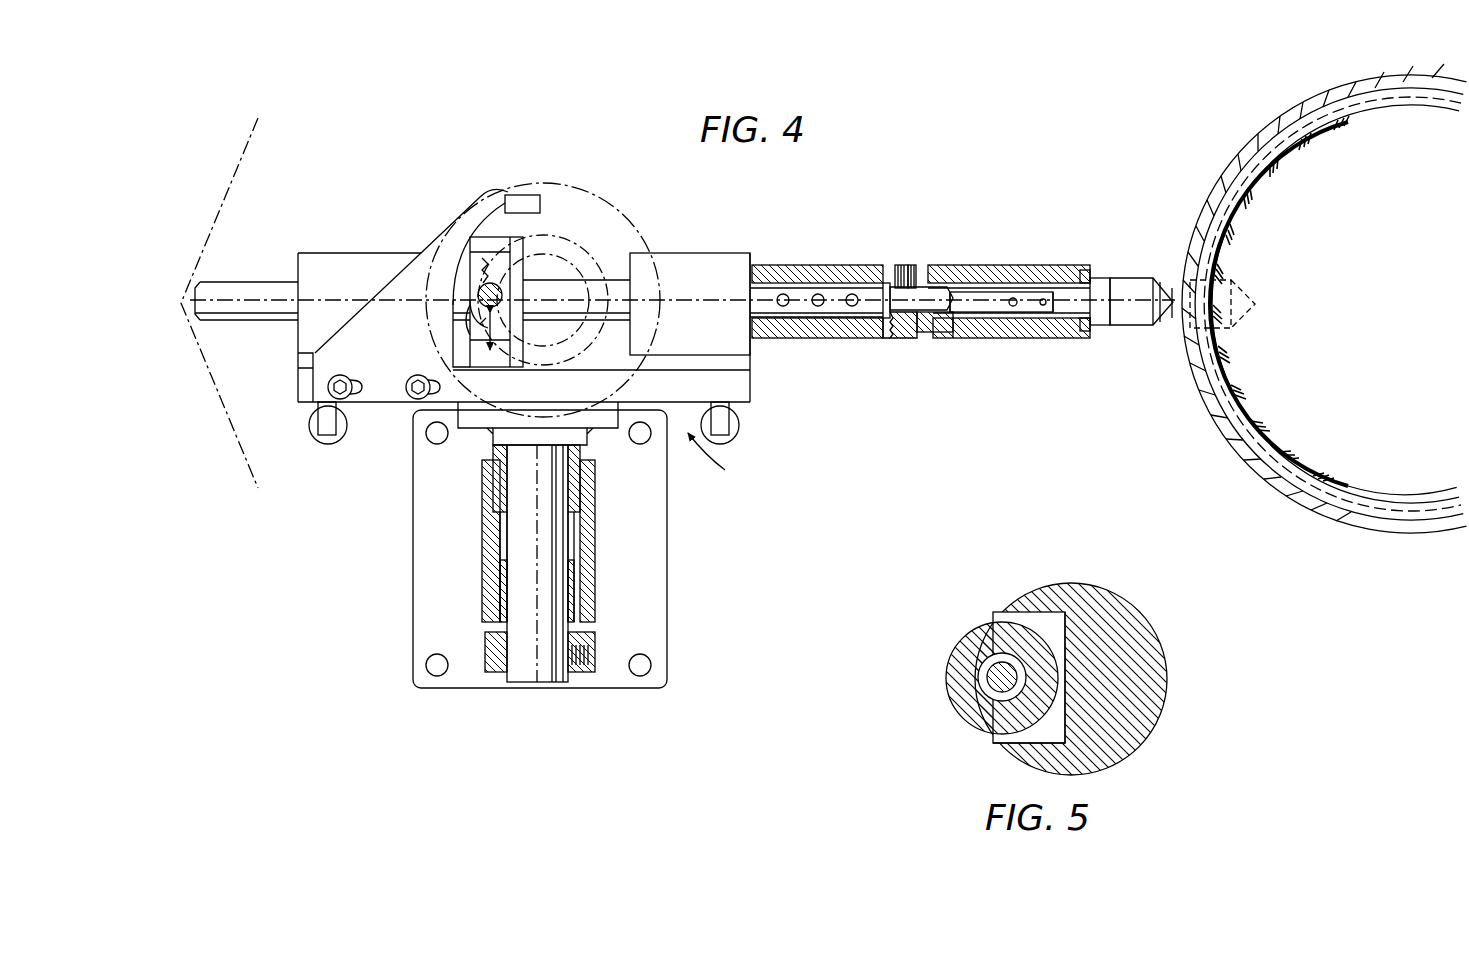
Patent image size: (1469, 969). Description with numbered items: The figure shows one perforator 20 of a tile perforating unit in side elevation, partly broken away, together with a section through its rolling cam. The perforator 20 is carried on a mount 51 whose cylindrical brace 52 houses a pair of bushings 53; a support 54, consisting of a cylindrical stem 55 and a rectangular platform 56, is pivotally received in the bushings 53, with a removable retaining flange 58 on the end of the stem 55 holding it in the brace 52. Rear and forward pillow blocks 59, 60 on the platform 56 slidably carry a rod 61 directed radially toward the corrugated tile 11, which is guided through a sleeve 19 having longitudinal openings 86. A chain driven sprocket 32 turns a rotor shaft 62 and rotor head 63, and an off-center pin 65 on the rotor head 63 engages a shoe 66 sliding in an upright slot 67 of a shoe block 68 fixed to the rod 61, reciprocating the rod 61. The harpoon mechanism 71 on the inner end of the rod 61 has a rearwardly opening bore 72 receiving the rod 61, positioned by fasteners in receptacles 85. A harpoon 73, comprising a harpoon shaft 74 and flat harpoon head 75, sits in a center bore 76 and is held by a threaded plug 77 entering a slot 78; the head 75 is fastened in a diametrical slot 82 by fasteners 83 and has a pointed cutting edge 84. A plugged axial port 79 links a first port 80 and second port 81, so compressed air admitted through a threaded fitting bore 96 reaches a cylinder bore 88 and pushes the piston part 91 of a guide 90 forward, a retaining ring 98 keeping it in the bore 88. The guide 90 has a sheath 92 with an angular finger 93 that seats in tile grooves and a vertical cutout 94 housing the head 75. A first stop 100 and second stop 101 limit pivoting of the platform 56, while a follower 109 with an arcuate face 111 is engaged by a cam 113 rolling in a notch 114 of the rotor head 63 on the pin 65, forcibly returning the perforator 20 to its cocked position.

In FIG. 4, the corrugated tile 11 is at (1310, 462).
In FIG. 4, the sleeve 19 is at (1338, 525).
In FIG. 4, the perforator 20 is at (905, 168).
In FIG. 4, the chain driven sprocket 32 is at (605, 200).
In FIG. 4, the mount 51 is at (680, 565).
In FIG. 4, the cylindrical brace 52 is at (600, 540).
In FIG. 4, the bushings 53 is at (595, 497).
In FIG. 4, the support 54 is at (726, 464).
In FIG. 4, the cylindrical stem 55 is at (552, 577).
In FIG. 4, the rectangular platform 56 is at (752, 392).
In FIG. 4, the retaining flange 58 is at (600, 662).
In FIG. 4, the rear pillow block 59 is at (345, 254).
In FIG. 4, the forward pillow block 60 is at (716, 254).
In FIG. 4, the rod 61 is at (238, 282).
In FIG. 4, the rotor shaft 62 is at (568, 345).
In FIG. 4, the rotor head 63 is at (596, 320).
In FIG. 5, the rotor head 63 is at (1170, 695).
In FIG. 4, the off-center pin 65 is at (478, 295).
In FIG. 5, the off-center pin 65 is at (975, 682).
In FIG. 4, the shoe 66 is at (458, 322).
In FIG. 4, the upright slot 67 is at (456, 352).
In FIG. 4, the shoe block 68 is at (518, 245).
In FIG. 4, the harpoon mechanism 71 is at (1045, 212).
In FIG. 4, the rearwardly opening bore 72 is at (855, 338).
In FIG. 4, the harpoon 73 is at (972, 340).
In FIG. 4, the harpoon shaft 74 is at (930, 332).
In FIG. 4, the harpoon head 75 is at (1135, 278).
In FIG. 4, the center bore 76 is at (888, 290).
In FIG. 4, the threaded plug 77 is at (900, 342).
In FIG. 4, the slot 78 is at (888, 340).
In FIG. 4, the plugged axial port 79 is at (932, 295).
In FIG. 4, the first port 80 is at (905, 264).
In FIG. 4, the second port 81 is at (962, 286).
In FIG. 4, the diametrical slot 82 is at (1062, 310).
In FIG. 4, the fasteners 83 is at (1014, 298).
In FIG. 4, the cutting edge 84 is at (1163, 325).
In FIG. 4, the receptacles 85 is at (785, 292).
In FIG. 4, the longitudinal openings 86 is at (1195, 330).
In FIG. 4, the cylinder bore 88 is at (985, 340).
In FIG. 4, the guide 90 is at (1100, 280).
In FIG. 4, the piston part 91 is at (1070, 280).
In FIG. 4, the sheath 92 is at (1100, 338).
In FIG. 4, the angular finger 93 is at (1160, 280).
In FIG. 4, the vertical cutout 94 is at (1170, 320).
In FIG. 4, the threaded fitting bore 96 is at (917, 265).
In FIG. 4, the retaining ring 98 is at (1075, 322).
In FIG. 4, the first stop 100 is at (745, 425).
In FIG. 4, the second stop 101 is at (340, 428).
In FIG. 4, the follower 109 is at (405, 262).
In FIG. 4, the arcuate face 111 is at (501, 221).
In FIG. 5, the cam 113 is at (965, 718).
In FIG. 5, the notch 114 is at (998, 748).